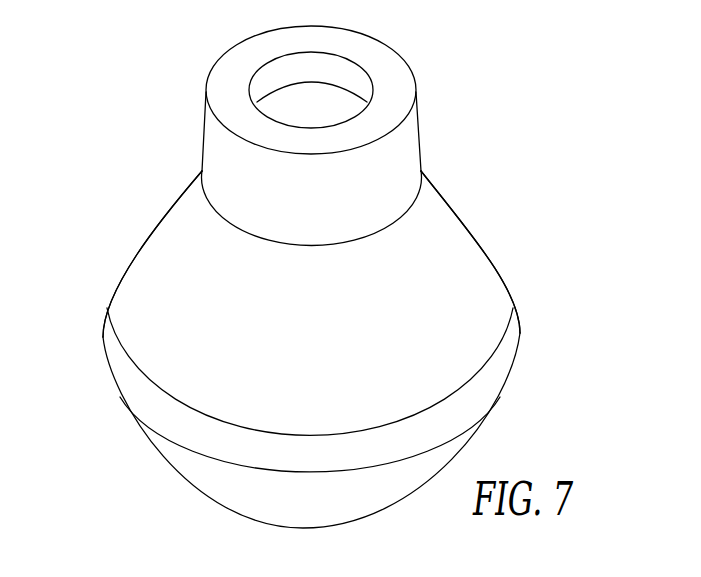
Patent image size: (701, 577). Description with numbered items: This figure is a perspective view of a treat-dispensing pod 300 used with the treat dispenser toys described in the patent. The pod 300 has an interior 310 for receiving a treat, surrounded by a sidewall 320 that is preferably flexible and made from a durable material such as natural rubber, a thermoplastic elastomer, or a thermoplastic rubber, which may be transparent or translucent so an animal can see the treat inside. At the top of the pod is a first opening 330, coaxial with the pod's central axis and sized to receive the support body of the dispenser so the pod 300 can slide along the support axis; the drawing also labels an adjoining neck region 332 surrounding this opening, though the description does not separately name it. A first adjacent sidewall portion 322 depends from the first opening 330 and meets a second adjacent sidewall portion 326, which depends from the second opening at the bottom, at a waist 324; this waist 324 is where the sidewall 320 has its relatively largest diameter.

The treat-dispensing pod 300 is at (118, 110).
The interior 310 is at (338, 82).
The sidewall 320 is at (460, 243).
The first adjacent sidewall portion 322 is at (172, 233).
The waist 324 is at (502, 368).
The second adjacent sidewall portion 326 is at (180, 460).
The first opening 330 is at (268, 62).
The neck / cylindrical portion 332 is at (408, 138).